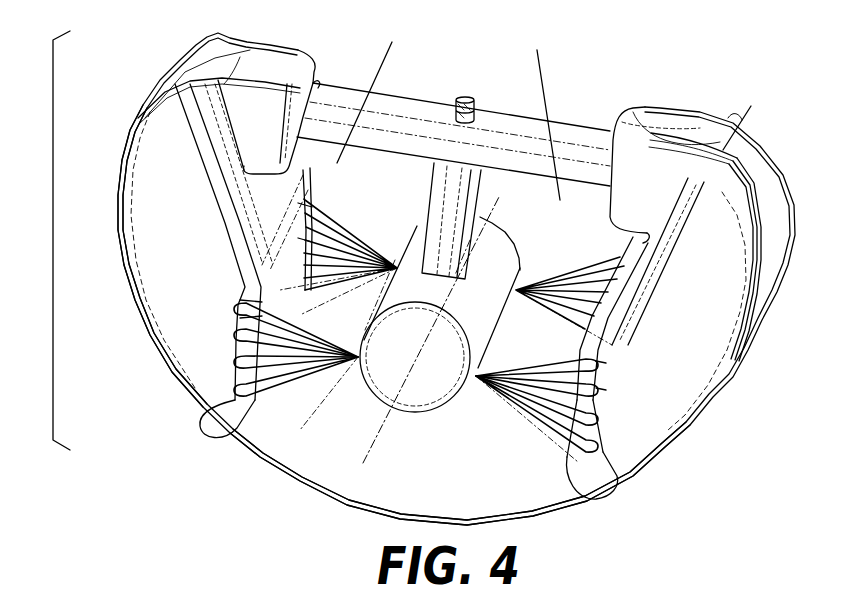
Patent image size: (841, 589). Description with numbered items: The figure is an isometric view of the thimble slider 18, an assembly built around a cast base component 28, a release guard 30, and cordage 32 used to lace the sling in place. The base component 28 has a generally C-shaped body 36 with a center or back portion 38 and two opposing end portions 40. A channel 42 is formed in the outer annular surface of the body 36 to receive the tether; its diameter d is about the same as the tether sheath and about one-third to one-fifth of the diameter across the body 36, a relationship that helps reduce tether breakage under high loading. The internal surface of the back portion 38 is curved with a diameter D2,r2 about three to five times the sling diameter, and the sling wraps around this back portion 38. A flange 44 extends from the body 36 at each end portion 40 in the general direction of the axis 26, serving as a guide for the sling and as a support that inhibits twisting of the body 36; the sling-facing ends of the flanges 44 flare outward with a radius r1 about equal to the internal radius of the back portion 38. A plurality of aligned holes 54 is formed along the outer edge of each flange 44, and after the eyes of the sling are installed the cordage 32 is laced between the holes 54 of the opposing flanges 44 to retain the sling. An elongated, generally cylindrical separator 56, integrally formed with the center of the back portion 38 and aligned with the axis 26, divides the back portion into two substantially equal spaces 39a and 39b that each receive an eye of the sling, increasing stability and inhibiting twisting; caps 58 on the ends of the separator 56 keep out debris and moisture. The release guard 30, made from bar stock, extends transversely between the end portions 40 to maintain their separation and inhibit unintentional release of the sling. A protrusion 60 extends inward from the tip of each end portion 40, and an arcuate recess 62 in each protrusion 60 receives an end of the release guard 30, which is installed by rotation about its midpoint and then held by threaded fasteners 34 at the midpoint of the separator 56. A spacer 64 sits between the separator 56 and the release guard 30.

The thimble slider 18 is at (421, 274).
The axis 26 is at (381, 442).
The base component 28 is at (53, 230).
The release guard 30 is at (530, 164).
The cordage 32 is at (333, 228).
The threaded fasteners 34 is at (465, 100).
The body 36 is at (124, 268).
The back portion 38 is at (362, 487).
The space 39a is at (372, 91).
The space 39b is at (540, 112).
The end portions 40 is at (122, 182).
The channel 42 is at (193, 58).
The flange 44 is at (226, 222).
The holes 54 is at (303, 206).
The separator 56 is at (492, 327).
The caps 58 is at (416, 320).
The protrusion 60 is at (300, 48).
The recess 62 is at (316, 86).
The spacer 64 is at (455, 237).
The diameter of channel d is at (739, 118).
The radius r1 is at (213, 413).
The diameter and internal radius of back portion D2,r2 is at (375, 366).